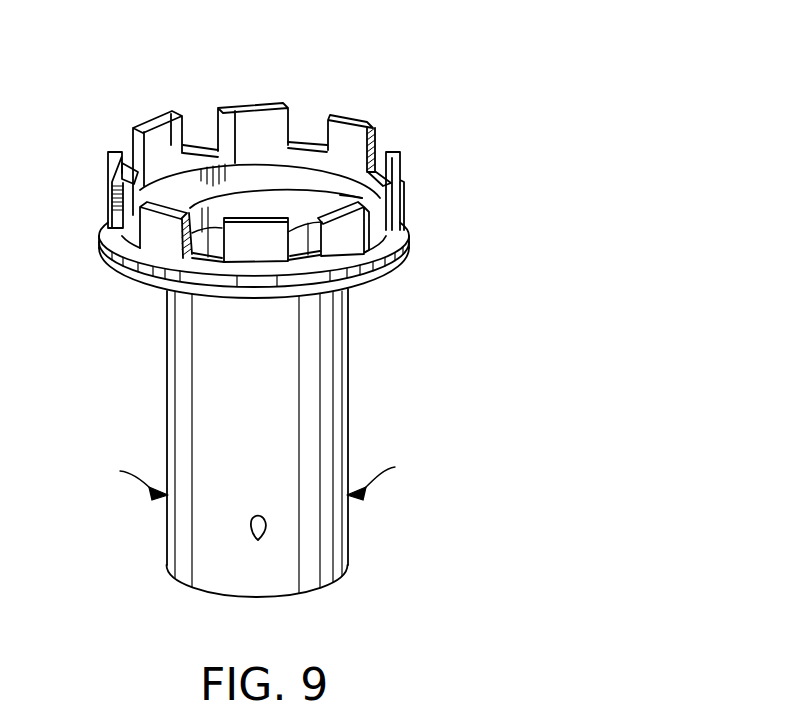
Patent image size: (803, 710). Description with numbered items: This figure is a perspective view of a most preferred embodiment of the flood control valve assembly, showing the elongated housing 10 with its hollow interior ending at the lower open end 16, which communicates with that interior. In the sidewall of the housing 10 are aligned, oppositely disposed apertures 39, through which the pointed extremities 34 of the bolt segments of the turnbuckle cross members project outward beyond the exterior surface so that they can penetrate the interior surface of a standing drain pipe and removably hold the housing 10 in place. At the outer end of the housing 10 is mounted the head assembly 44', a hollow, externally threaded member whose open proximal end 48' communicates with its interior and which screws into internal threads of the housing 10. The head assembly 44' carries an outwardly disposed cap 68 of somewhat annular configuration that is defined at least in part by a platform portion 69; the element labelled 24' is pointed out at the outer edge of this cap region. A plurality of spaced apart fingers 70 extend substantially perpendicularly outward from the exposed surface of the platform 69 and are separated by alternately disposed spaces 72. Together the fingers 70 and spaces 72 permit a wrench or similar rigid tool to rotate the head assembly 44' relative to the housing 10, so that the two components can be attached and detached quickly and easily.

The housing 10 is at (373, 385).
The lower open end 16 is at (330, 584).
The flange 24' is at (290, 262).
The pointed extremity 34 is at (250, 519).
The aperture 39 is at (260, 516).
The head assembly 44' is at (274, 130).
The open proximal end 48' is at (276, 193).
The cap 68 is at (352, 193).
The platform portion 69 is at (112, 193).
The fingers 70 is at (143, 128).
The spaces 72 is at (197, 126).